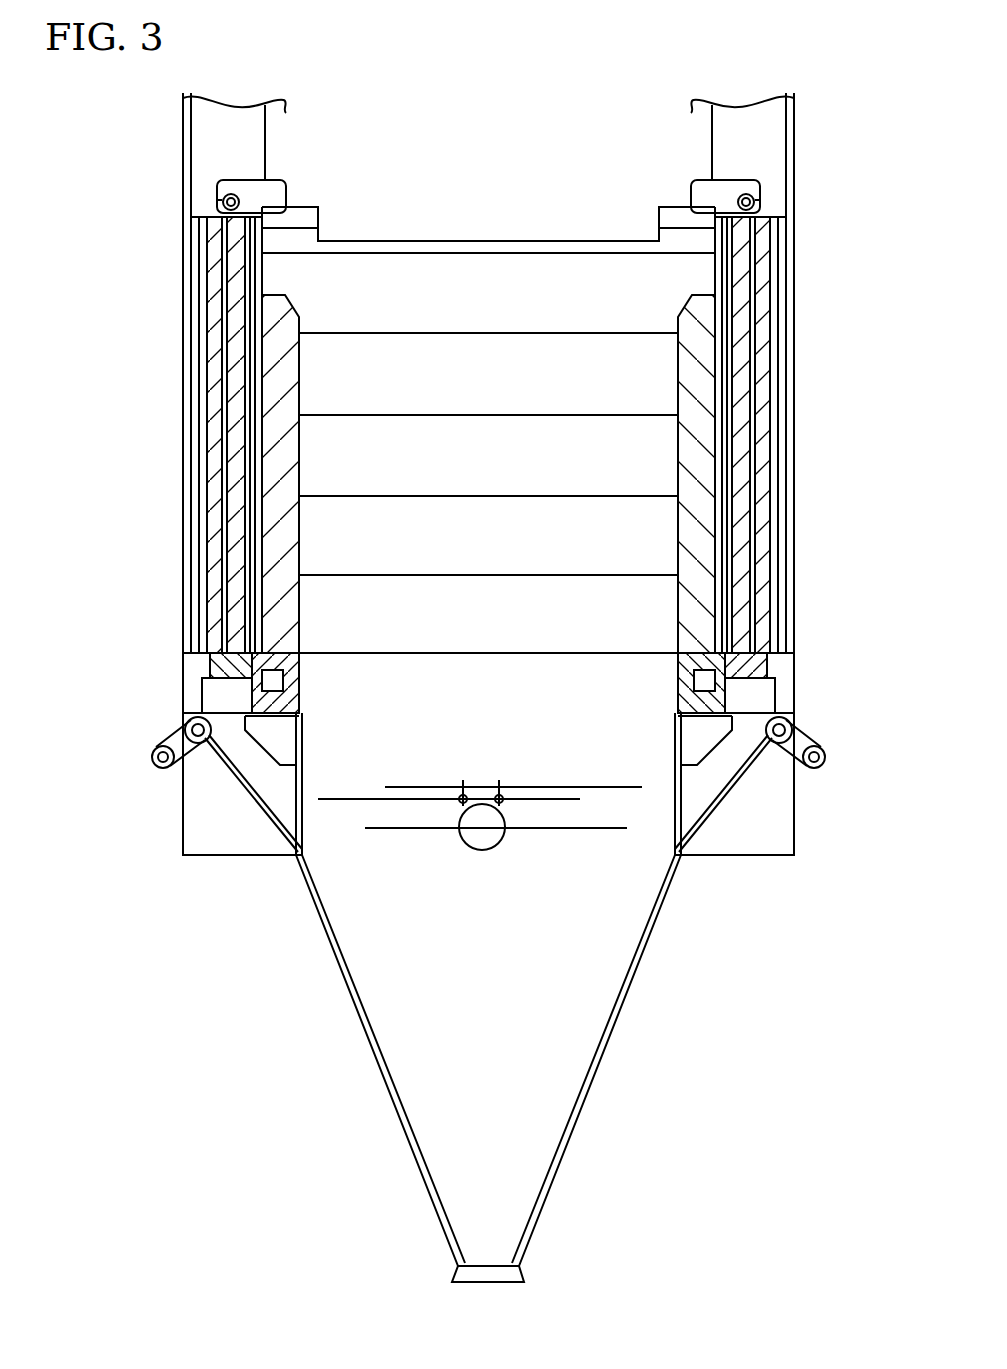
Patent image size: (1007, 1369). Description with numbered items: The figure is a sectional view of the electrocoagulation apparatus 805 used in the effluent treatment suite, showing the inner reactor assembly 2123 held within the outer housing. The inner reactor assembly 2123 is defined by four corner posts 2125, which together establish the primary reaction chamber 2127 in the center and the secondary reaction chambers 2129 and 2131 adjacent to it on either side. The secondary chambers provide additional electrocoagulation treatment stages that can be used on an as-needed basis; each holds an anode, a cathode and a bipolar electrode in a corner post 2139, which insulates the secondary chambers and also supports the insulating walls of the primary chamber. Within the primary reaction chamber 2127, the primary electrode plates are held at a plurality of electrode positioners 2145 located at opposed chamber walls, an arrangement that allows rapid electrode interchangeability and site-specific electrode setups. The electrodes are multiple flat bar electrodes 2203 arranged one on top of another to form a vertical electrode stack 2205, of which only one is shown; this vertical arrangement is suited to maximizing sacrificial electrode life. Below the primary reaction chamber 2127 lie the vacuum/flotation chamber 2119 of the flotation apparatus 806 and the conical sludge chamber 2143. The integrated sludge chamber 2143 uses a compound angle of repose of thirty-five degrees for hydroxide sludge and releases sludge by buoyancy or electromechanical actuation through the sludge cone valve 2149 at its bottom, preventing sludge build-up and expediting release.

The electrocoagulation apparatus 805 is at (540, 284).
The dissolved air/gas flotation apparatus 806 is at (365, 124).
The vacuum/flotation chamber 2119 is at (450, 170).
The inner reactor assembly 2123 is at (793, 278).
The corner posts 2125 is at (212, 153).
The primary reaction chamber 2127 is at (489, 490).
The secondary reaction chamber 2129 is at (212, 480).
The secondary reaction chamber 2131 is at (755, 448).
The corner post 2139 is at (207, 218).
The conical sludge chamber 2143 is at (517, 1044).
The electrode positioners 2145 is at (299, 538).
The sludge cone valve 2149 is at (510, 1275).
The flat bar electrodes 2203 is at (563, 392).
The electrode stack 2205 is at (445, 331).